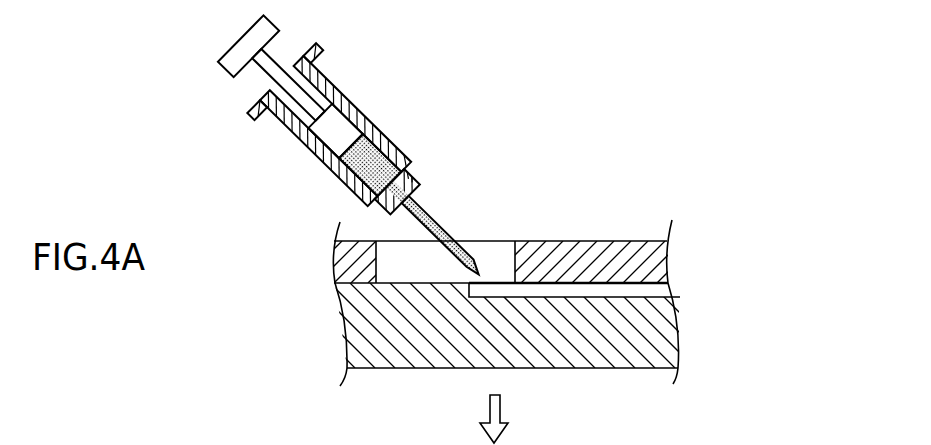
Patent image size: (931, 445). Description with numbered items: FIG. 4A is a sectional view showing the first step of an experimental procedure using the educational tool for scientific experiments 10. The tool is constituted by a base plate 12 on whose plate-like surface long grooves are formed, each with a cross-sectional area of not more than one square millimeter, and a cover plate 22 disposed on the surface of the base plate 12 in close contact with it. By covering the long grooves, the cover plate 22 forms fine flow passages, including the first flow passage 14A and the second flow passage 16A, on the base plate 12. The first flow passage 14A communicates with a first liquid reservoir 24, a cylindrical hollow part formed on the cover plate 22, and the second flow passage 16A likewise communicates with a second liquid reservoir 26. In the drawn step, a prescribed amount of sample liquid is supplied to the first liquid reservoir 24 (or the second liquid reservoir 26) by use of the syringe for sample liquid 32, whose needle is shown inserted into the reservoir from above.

The educational tool for scientific experiments 10 is at (571, 205).
The base plate 12 is at (665, 335).
The first flow passage 14A is at (681, 291).
The second flow passage 16A is at (663, 288).
The cover plate 22 is at (658, 263).
The first liquid reservoir 24 is at (485, 229).
The second liquid reservoir 26 is at (500, 241).
The syringe for sample liquid 32 is at (368, 115).